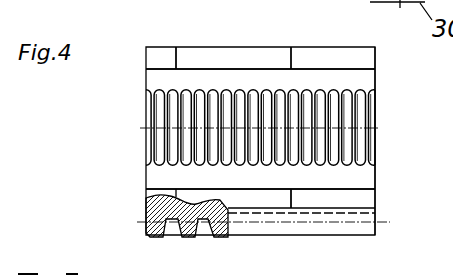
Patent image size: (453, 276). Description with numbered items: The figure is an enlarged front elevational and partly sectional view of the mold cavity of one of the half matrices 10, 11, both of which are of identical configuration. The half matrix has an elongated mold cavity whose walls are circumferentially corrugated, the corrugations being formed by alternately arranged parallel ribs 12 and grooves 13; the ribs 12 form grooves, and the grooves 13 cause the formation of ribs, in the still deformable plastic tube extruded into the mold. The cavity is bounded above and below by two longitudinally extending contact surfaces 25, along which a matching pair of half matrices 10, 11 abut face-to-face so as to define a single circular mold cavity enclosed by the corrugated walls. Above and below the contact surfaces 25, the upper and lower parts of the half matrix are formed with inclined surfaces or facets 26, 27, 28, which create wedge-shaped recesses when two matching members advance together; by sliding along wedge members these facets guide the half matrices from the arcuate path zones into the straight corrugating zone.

The half matrix 10 is at (225, 141).
The half matrix 11 is at (140, 137).
The ribs 12 is at (360, 108).
The grooves 13 is at (372, 141).
The contact surfaces 25 is at (255, 83).
The inclined surface or facet 26 is at (228, 58).
The inclined surface or facet 27 is at (327, 58).
The inclined surface or facet 28 is at (162, 55).